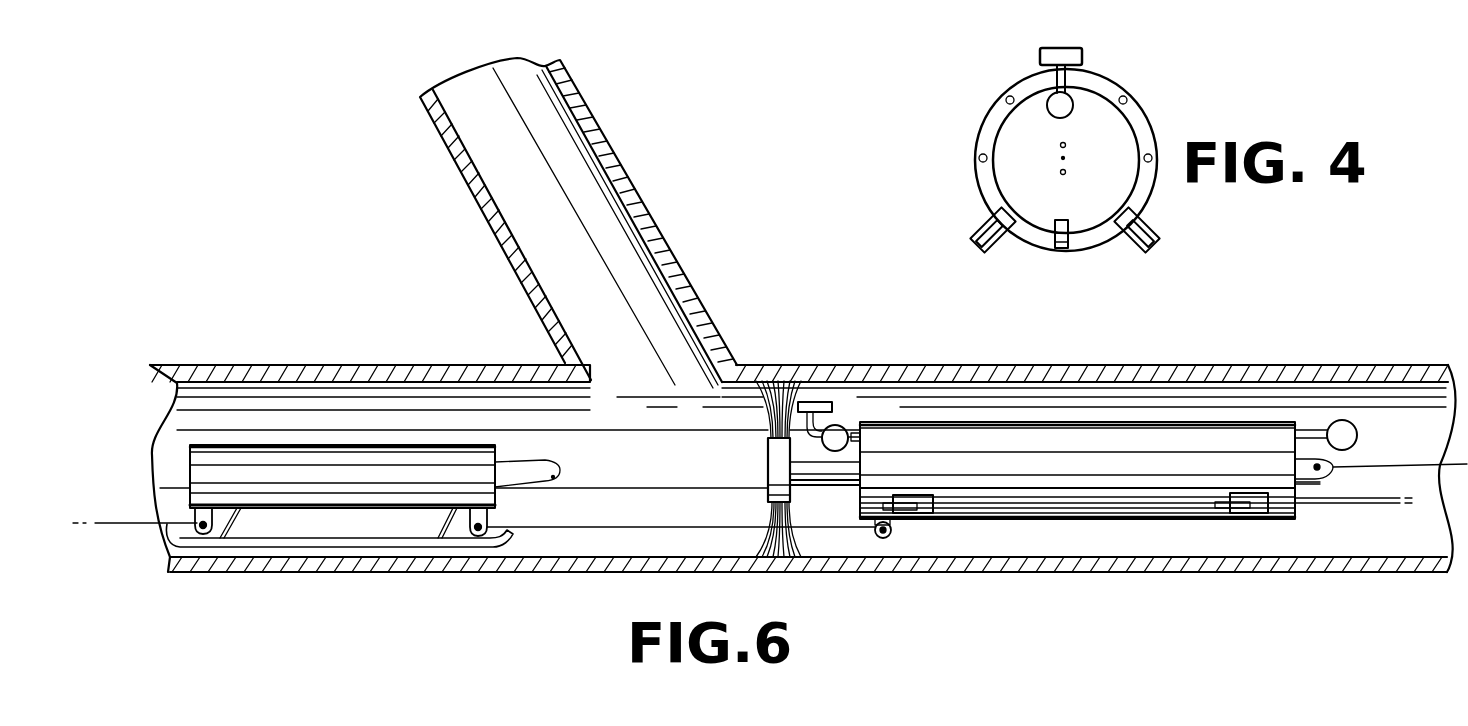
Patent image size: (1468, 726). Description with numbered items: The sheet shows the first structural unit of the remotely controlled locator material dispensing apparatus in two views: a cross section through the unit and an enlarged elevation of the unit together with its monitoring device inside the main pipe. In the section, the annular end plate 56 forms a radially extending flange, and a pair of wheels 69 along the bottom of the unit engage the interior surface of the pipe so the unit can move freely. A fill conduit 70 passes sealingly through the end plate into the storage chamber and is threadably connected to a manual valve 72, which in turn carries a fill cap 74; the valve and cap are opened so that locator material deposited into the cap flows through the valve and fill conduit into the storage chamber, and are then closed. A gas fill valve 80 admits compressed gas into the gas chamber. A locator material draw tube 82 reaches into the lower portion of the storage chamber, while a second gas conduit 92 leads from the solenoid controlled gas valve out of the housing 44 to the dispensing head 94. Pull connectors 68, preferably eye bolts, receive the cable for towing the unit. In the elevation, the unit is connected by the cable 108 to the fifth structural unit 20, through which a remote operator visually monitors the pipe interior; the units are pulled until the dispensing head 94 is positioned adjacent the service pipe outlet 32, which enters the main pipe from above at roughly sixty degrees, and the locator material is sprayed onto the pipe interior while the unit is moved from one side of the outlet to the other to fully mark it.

In FIG. 6, the fifth structural unit 20 is at (452, 460).
In FIG. 6, the service pipe outlet 32 is at (737, 365).
In FIG. 6, the housing 44 is at (1020, 530).
In FIG. 4, the end plate 56 is at (1143, 193).
In FIG. 4, the pull connector 68 is at (1070, 247).
In FIG. 6, the pull connector 68 is at (483, 517).
In FIG. 4, the wheels 69 is at (975, 247).
In FIG. 6, the fill conduit 70 is at (863, 425).
In FIG. 4, the manual valve 72 is at (1068, 92).
In FIG. 6, the manual valve 72 is at (840, 426).
In FIG. 4, the fill cap 74 is at (1073, 50).
In FIG. 6, the fill cap 74 is at (815, 402).
In FIG. 6, the gas fill valve 80 is at (1356, 439).
In FIG. 4, the locator material draw tube 82 is at (1066, 173).
In FIG. 4, the second gas conduit 92 is at (1066, 144).
In FIG. 6, the dispensing head 94 is at (778, 467).
In FIG. 6, the cable 108 is at (677, 527).